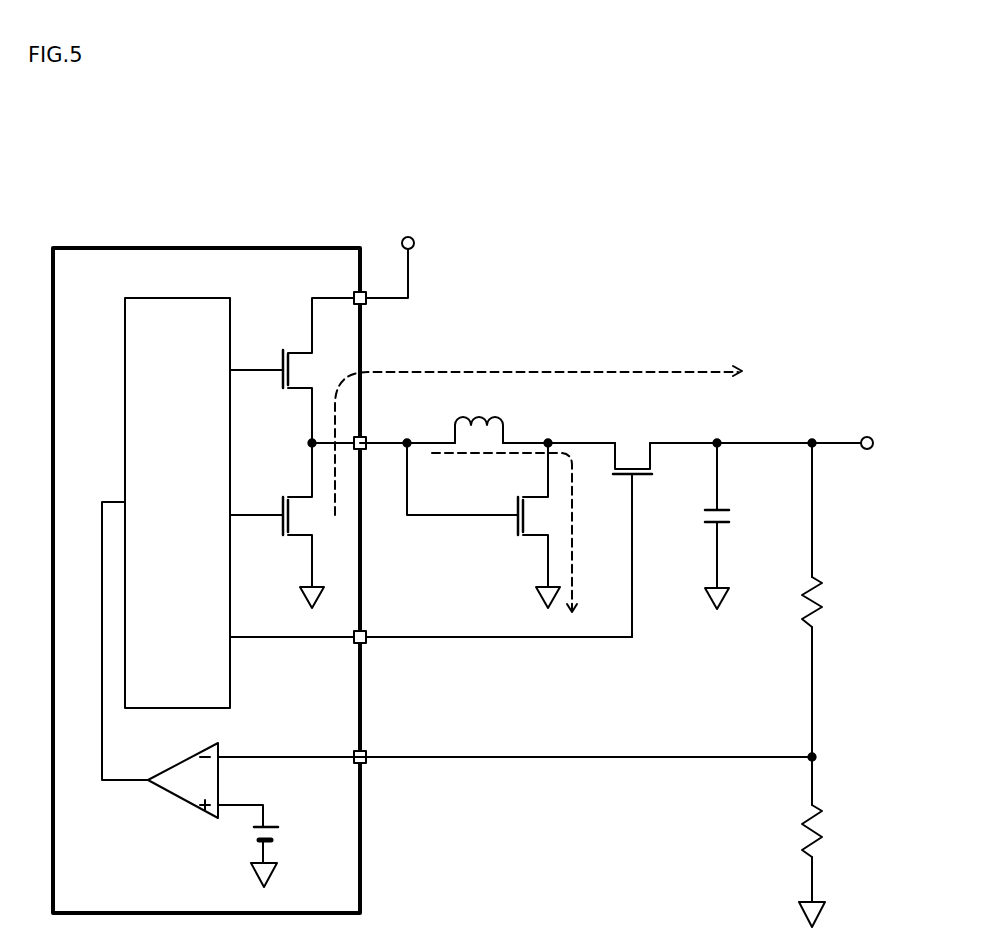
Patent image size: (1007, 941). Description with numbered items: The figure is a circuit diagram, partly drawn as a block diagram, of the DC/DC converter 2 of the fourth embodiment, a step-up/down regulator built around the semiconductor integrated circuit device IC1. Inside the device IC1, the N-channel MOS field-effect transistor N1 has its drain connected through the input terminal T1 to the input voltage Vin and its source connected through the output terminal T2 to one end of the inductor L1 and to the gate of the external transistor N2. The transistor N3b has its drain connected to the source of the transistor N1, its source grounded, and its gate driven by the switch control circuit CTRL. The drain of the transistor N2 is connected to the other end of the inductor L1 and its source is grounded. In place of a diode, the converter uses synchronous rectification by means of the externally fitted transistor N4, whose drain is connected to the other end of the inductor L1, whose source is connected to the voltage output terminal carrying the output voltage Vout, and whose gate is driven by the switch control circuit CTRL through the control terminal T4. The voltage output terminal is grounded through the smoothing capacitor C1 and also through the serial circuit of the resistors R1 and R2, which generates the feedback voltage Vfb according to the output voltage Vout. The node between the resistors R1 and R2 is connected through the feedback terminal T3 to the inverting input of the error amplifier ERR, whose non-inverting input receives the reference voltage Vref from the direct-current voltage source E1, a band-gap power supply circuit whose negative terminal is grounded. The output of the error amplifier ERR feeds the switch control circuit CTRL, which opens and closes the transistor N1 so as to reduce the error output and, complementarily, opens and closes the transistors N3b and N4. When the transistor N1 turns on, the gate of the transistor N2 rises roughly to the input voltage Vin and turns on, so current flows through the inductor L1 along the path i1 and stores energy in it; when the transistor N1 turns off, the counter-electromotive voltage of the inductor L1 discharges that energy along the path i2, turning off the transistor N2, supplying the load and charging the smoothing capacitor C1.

The DC/DC converter 2 is at (641, 248).
The semiconductor integrated circuit device IC1 is at (207, 248).
The switch control circuit CTRL is at (180, 298).
The N-channel MOS field-effect transistor N1 is at (282, 364).
The N-channel MOS field-effect transistor N3b is at (285, 536).
The N-channel MOS field-effect transistor N2 is at (517, 532).
The N-channel MOS field-effect transistor N4 is at (639, 479).
The inductor L1 is at (478, 418).
The smoothing capacitor C1 is at (731, 517).
The resistor R1 is at (826, 602).
The resistor R2 is at (826, 830).
The direct-current voltage source E1 is at (278, 835).
The error amplifier ERR is at (182, 763).
The input terminal T1 is at (368, 305).
The output terminal T2 is at (365, 436).
The feedback terminal T3 is at (366, 763).
The control terminal T4 is at (366, 643).
The input voltage Vin is at (392, 257).
The output voltage Vout is at (866, 431).
The feedback voltage Vfb is at (517, 747).
The reference voltage Vref is at (250, 803).
The path i1 is at (514, 532).
The path i2 is at (538, 430).